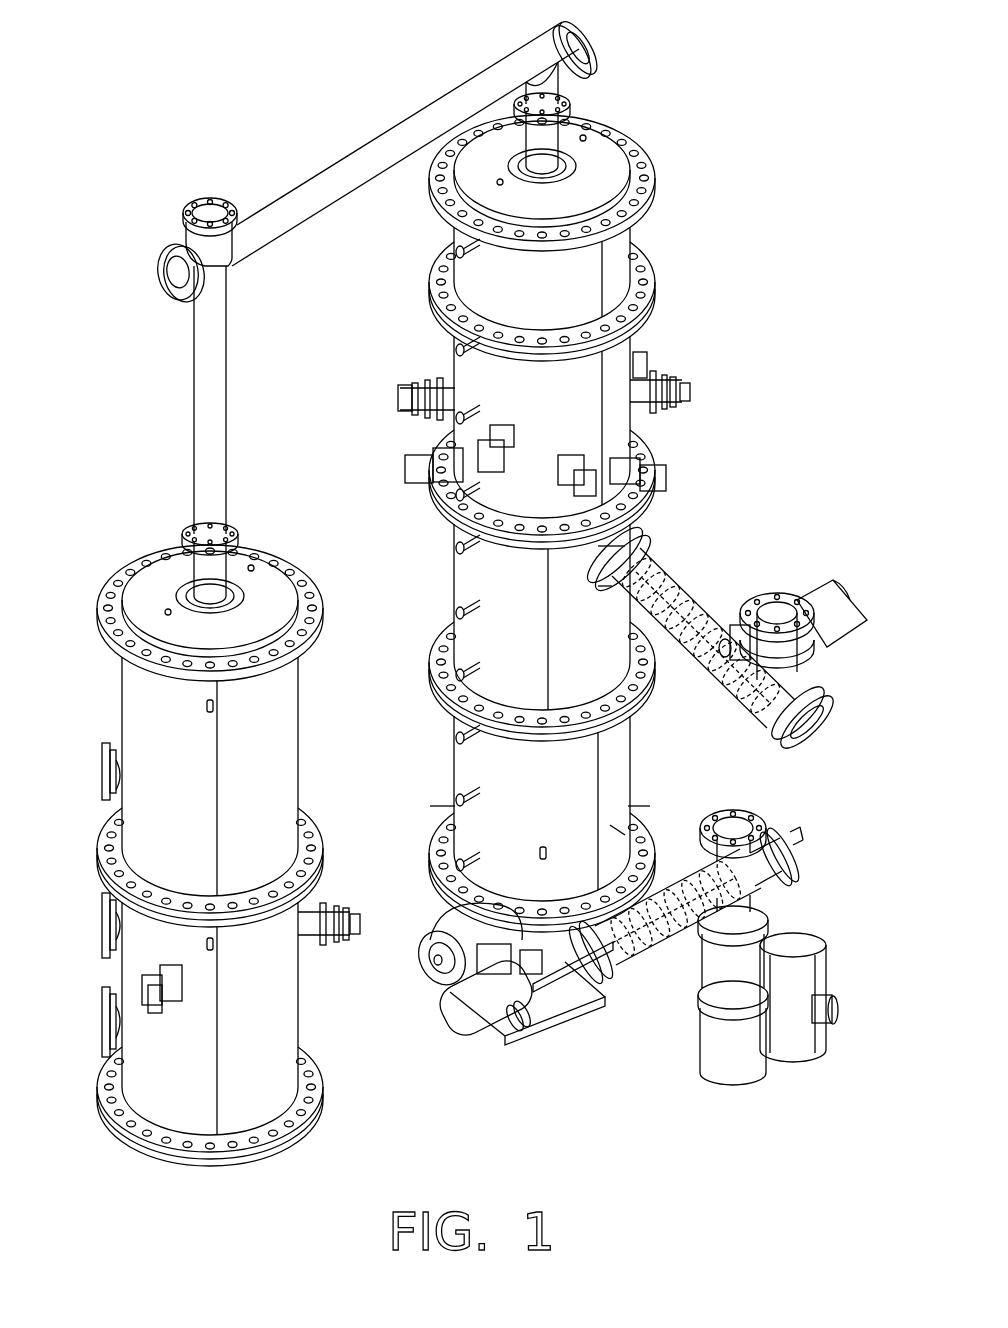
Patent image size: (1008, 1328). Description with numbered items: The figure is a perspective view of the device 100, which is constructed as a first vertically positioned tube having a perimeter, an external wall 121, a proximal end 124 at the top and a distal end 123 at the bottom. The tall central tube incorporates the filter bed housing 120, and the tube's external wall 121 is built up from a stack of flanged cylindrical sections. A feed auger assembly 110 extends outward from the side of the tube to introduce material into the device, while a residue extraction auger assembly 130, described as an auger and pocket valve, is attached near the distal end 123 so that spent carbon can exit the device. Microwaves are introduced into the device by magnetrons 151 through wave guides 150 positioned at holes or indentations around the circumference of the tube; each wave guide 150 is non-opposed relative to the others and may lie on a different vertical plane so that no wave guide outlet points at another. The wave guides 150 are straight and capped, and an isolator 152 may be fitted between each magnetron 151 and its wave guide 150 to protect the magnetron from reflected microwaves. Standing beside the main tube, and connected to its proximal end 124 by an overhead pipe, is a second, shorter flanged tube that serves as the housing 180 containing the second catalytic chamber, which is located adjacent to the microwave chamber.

The device 100 is at (253, 133).
The proximal end 124 is at (592, 155).
The filter bed housing 120 is at (544, 580).
The external wall 121 is at (623, 752).
The wave guide 150 is at (711, 363).
The magnetron 151 is at (692, 386).
The isolator 152 is at (663, 400).
The feed auger assembly 110 is at (685, 572).
The residue extraction auger assembly 130 is at (667, 953).
The distal end 123 is at (553, 935).
The housing 180 is at (133, 698).